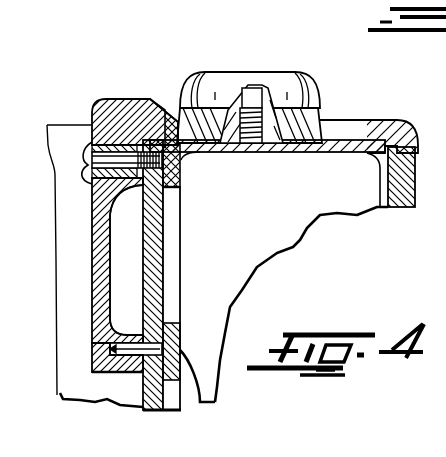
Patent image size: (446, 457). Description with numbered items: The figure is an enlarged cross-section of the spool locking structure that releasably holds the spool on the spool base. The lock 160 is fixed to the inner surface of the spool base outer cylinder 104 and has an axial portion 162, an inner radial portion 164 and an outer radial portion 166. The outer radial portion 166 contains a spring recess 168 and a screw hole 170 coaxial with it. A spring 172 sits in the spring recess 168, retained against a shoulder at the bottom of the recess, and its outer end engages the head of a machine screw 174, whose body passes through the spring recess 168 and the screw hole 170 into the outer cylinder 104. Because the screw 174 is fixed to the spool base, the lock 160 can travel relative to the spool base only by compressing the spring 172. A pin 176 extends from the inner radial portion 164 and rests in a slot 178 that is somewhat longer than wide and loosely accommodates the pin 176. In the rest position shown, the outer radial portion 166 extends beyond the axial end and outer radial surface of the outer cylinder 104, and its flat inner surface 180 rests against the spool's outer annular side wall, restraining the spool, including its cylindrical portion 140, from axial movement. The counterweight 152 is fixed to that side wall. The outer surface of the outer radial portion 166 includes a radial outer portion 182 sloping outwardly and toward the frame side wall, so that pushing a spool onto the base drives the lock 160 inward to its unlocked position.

The outer cylinder 104 is at (168, 232).
The cylindrical portion 140 is at (214, 400).
The counterweight 152 is at (287, 72).
The lock 160 is at (108, 83).
The axial portion 162 is at (94, 268).
The inner radial portion 164 is at (125, 373).
The outer radial portion 166 is at (138, 99).
The spring recess 168 is at (112, 205).
The screw hole 170 is at (156, 143).
The spring 172 is at (92, 178).
The machine screw 174 is at (86, 158).
The pin 176 is at (110, 345).
The slot 178 is at (160, 318).
The flat inner surface 180 is at (180, 158).
The radial outer portion 182 is at (150, 138).